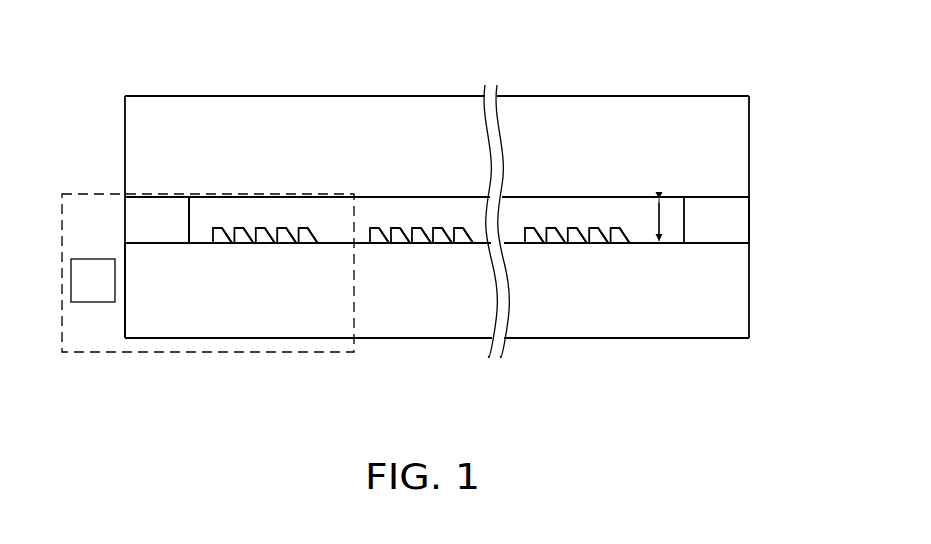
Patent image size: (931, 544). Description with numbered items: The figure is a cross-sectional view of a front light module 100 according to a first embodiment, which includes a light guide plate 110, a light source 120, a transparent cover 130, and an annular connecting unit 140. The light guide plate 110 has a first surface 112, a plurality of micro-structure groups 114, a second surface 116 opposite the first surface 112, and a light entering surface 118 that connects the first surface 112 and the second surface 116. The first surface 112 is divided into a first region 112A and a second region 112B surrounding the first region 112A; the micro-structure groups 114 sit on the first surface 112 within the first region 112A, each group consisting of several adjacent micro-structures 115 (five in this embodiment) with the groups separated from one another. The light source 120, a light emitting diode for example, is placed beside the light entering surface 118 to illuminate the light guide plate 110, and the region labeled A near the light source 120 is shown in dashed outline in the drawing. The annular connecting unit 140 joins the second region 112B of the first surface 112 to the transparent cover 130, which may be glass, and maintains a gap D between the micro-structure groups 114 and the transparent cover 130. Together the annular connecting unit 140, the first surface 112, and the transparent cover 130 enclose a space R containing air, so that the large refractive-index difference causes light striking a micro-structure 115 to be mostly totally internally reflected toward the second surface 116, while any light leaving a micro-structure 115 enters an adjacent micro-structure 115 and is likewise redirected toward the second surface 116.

The front light module 100 is at (787, 417).
The light guide plate 110 is at (735, 292).
The first surface 112 is at (438, 126).
The first region 112A is at (337, 241).
The second region 112B is at (159, 241).
The micro-structure groups 114 is at (422, 149).
The micro-structures 115 is at (309, 232).
The second surface 116 is at (435, 341).
The light entering surface 118 is at (122, 307).
The light source 120 is at (95, 294).
The transparent cover 130 is at (652, 126).
The annular connecting unit 140 is at (142, 213).
The region A is at (235, 353).
The gap D is at (636, 243).
The space R is at (674, 243).